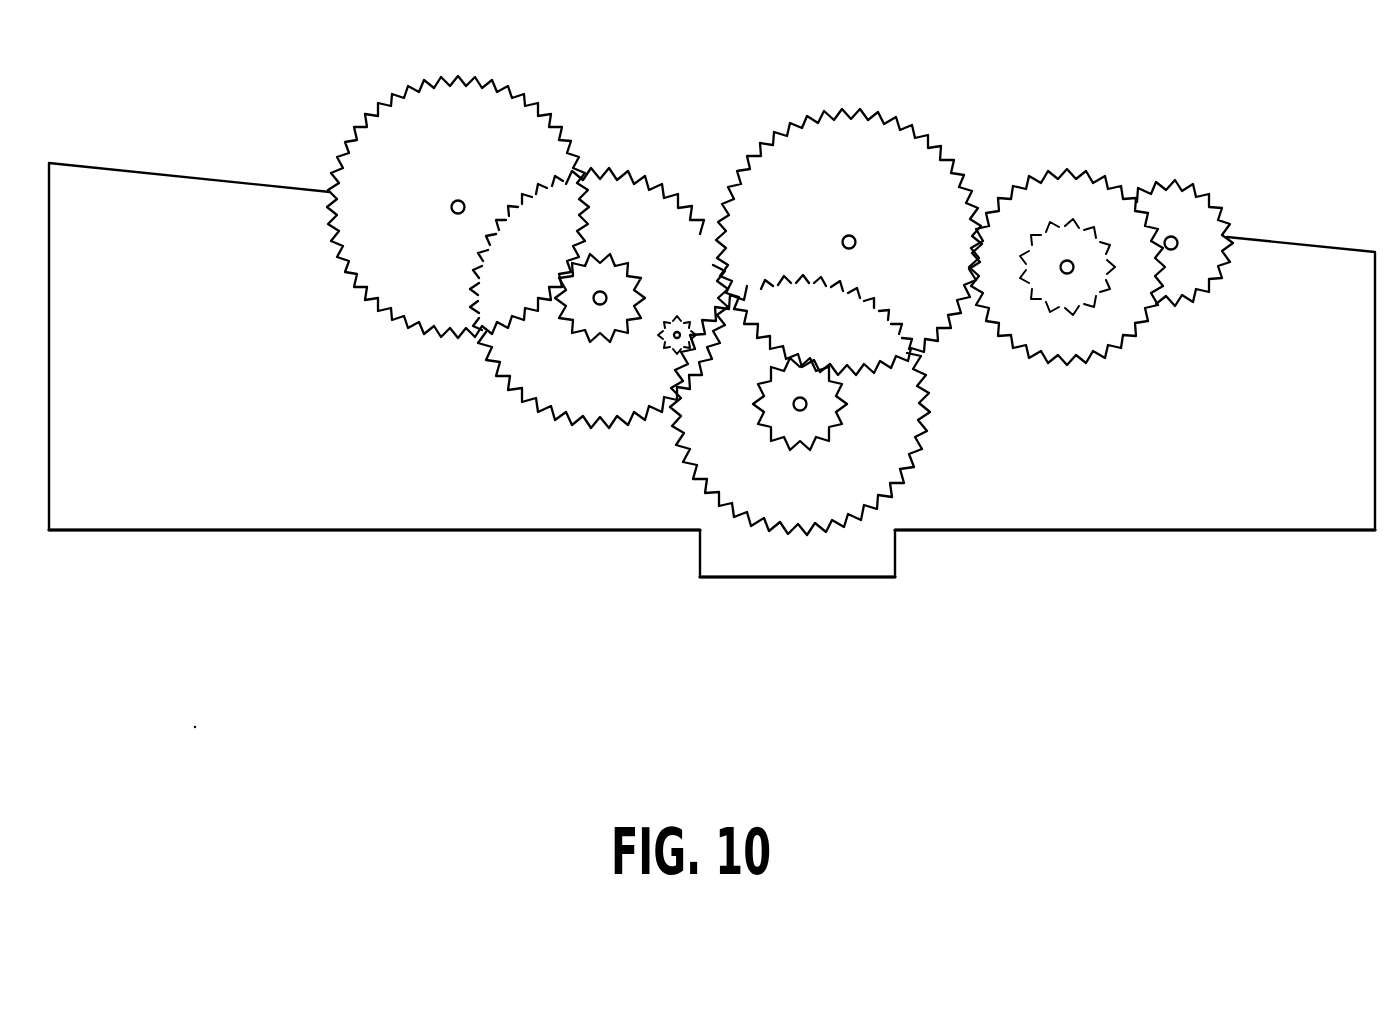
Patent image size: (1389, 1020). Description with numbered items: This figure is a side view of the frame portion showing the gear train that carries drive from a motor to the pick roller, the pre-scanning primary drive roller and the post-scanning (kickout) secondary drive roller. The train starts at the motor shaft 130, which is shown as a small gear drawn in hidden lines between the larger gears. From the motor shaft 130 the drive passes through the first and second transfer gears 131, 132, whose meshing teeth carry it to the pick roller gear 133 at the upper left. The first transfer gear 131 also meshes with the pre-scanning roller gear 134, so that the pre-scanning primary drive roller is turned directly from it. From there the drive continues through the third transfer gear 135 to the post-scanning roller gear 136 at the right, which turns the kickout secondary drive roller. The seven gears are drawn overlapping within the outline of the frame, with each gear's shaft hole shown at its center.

The motor shaft 130 is at (677, 314).
The first transfer gear 131 is at (868, 475).
The second transfer gear 132 is at (609, 396).
The pick roller gear 133 is at (422, 100).
The pre-scanning roller gear 134 is at (818, 152).
The third transfer gear 135 is at (1058, 193).
The post-scanning roller gear 136 is at (1210, 227).